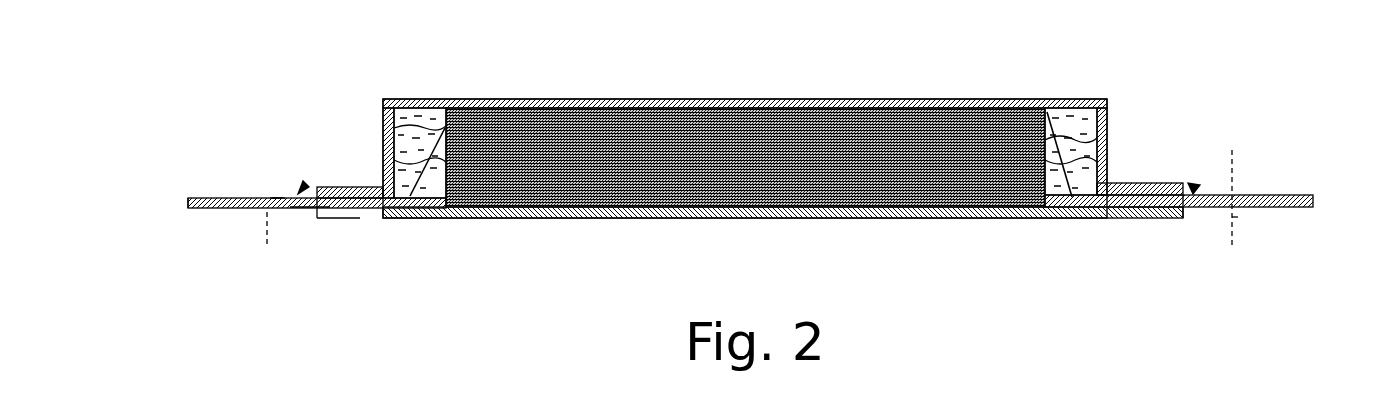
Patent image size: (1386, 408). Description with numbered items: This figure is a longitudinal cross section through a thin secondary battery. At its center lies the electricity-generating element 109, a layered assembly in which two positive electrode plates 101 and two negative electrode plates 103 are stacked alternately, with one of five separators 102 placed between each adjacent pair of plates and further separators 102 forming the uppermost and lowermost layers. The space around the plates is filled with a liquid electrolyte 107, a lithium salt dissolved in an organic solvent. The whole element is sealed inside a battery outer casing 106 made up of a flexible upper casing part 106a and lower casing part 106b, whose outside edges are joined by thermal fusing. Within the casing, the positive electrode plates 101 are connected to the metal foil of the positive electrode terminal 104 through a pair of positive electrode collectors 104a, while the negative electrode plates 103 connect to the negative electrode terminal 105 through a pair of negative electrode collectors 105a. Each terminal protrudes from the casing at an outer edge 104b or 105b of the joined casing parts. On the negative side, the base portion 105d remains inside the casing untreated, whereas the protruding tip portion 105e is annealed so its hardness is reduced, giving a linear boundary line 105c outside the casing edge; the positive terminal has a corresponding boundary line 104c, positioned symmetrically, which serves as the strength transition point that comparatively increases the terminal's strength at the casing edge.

The positive electrode plate 101 is at (383, 116).
The separator 102 is at (427, 100).
The negative electrode plate 103 is at (1095, 140).
The positive electrode terminal 104 is at (1247, 193).
The positive electrode collector 104a is at (1104, 184).
The outer edge 104b is at (1195, 190).
The boundary line 104c is at (1238, 217).
The negative electrode terminal 105 is at (228, 197).
The negative electrode collector 105a is at (350, 160).
The outer edge 105b is at (277, 197).
The boundary line 105c is at (265, 222).
The base portion 105d is at (279, 197).
The tip portion 105e is at (198, 198).
The battery outer casing 106 is at (172, 261).
The upper casing part 106a is at (298, 213).
The lower casing part 106b is at (312, 218).
The electrolyte 107 is at (410, 112).
The electricity-generating element 109 is at (743, 97).